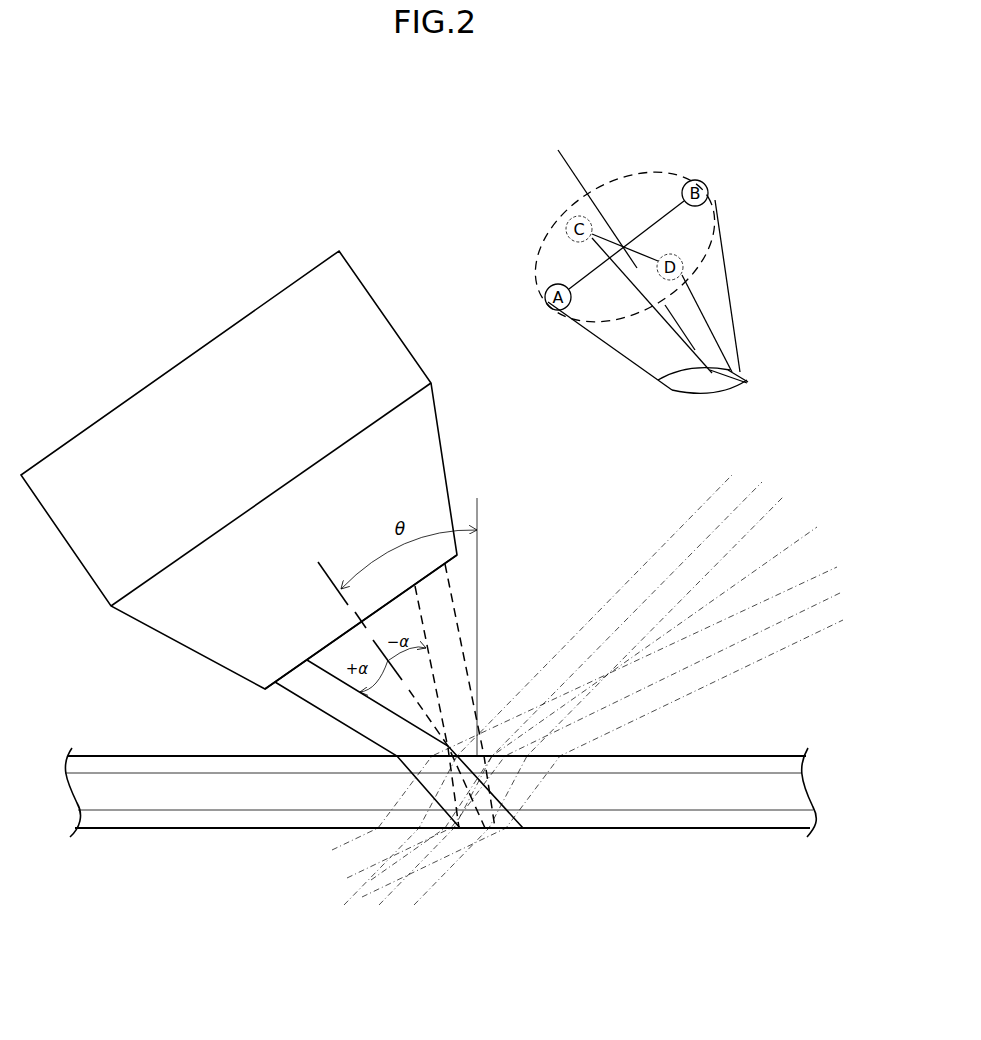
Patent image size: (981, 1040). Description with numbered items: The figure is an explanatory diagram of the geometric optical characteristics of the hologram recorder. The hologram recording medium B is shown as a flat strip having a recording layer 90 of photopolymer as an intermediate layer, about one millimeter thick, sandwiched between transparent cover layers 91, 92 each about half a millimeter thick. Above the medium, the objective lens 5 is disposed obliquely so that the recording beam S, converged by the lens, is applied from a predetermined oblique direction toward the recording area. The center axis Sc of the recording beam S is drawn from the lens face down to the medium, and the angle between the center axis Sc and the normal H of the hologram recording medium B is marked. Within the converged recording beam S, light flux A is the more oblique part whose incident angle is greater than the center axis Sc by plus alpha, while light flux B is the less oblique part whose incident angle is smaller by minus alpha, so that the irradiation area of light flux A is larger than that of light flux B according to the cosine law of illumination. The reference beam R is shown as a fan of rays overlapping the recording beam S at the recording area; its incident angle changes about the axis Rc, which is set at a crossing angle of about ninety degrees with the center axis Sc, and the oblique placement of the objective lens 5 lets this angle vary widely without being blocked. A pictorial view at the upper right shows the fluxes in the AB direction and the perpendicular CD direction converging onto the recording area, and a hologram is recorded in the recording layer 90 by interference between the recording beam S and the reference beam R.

The objective lens 5 is at (191, 365).
The center axis of the recording beam Sc is at (326, 574).
The recording beam S is at (326, 630).
The light flux A is at (399, 744).
The hologram recording medium B is at (80, 715).
The cover layer 91 is at (72, 766).
The recording layer 90 is at (82, 797).
The cover layer 92 is at (78, 818).
The normal of the hologram recording medium H is at (479, 567).
The reference beam R is at (825, 547).
The axis Rc is at (750, 577).